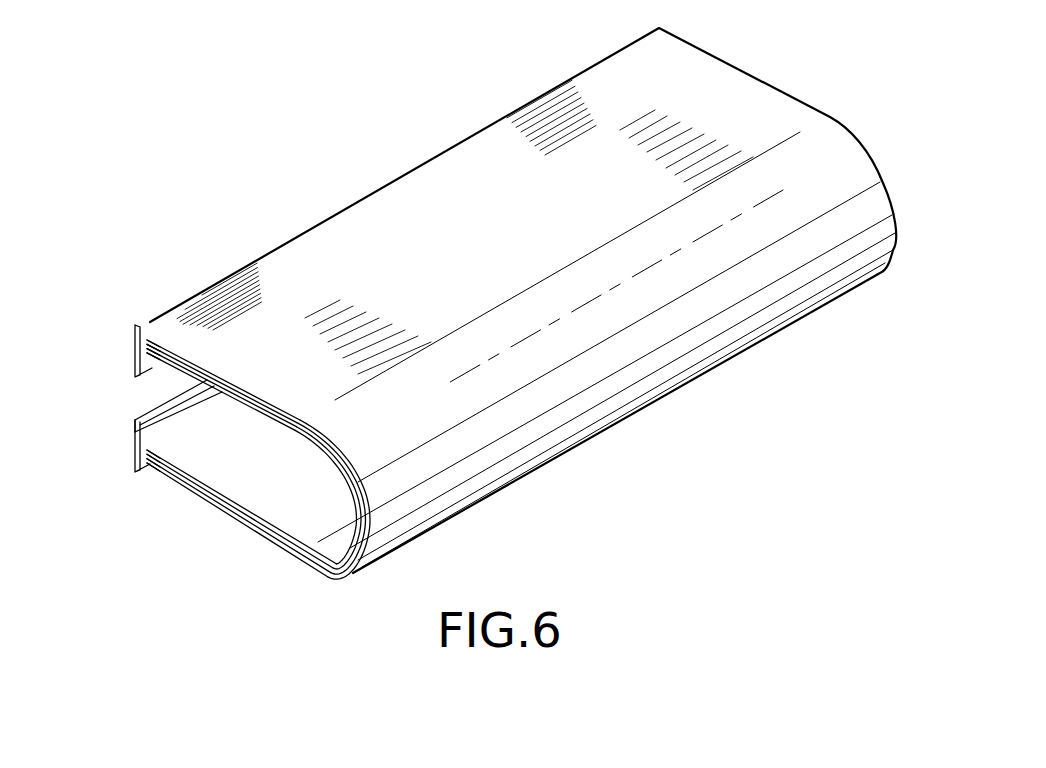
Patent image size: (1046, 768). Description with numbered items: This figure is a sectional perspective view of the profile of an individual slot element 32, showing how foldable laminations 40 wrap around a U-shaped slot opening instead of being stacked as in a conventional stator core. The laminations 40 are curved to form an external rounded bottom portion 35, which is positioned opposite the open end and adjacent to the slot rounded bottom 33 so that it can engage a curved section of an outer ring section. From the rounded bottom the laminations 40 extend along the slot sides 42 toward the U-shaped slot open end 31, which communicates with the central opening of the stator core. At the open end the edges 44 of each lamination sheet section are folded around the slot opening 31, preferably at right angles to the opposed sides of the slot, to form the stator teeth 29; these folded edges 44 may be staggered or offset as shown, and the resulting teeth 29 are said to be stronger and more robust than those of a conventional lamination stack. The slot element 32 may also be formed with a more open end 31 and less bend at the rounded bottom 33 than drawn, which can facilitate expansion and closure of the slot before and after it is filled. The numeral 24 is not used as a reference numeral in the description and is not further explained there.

The slot element 32 is at (308, 196).
The stator teeth 29 is at (134, 357).
The lower terminal plate 24 is at (134, 440).
The U-shaped slot open end 31 is at (153, 388).
The folded edges 44 is at (141, 335).
The slot sides 42 is at (247, 390).
The laminations 40 is at (268, 539).
The slot rounded bottom 33 is at (343, 547).
The external rounded bottom portion 35 is at (350, 579).